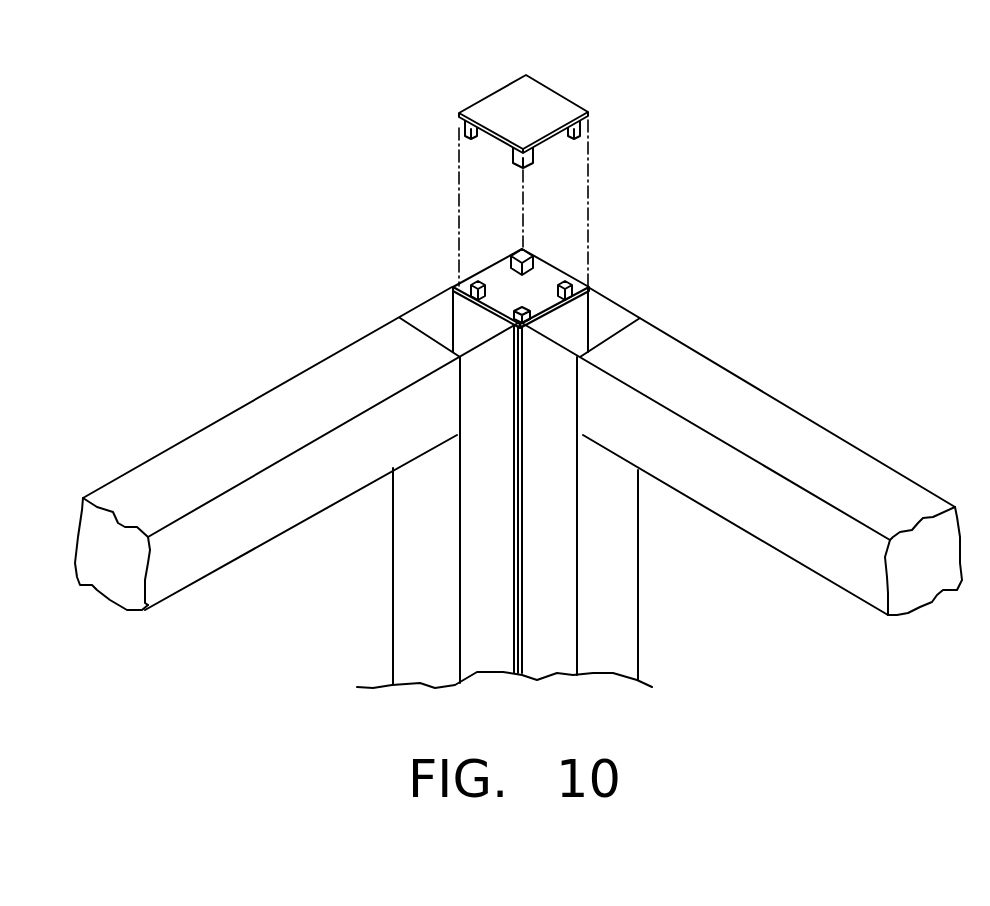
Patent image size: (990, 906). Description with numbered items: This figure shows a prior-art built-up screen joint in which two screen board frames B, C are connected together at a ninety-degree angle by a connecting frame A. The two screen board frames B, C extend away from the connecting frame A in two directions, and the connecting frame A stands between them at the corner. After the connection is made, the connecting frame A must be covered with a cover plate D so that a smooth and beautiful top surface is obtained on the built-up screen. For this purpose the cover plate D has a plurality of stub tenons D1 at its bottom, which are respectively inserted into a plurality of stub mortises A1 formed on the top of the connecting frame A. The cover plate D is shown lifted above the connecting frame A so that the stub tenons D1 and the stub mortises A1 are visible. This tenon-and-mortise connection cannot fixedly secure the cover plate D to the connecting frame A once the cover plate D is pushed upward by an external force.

The connecting frame A is at (503, 285).
The stub mortises A1 is at (527, 308).
The beam B is at (352, 363).
The beam C is at (693, 363).
The cover plate D is at (540, 87).
The stub tenons D1 is at (532, 153).